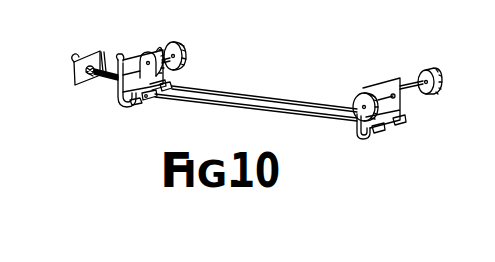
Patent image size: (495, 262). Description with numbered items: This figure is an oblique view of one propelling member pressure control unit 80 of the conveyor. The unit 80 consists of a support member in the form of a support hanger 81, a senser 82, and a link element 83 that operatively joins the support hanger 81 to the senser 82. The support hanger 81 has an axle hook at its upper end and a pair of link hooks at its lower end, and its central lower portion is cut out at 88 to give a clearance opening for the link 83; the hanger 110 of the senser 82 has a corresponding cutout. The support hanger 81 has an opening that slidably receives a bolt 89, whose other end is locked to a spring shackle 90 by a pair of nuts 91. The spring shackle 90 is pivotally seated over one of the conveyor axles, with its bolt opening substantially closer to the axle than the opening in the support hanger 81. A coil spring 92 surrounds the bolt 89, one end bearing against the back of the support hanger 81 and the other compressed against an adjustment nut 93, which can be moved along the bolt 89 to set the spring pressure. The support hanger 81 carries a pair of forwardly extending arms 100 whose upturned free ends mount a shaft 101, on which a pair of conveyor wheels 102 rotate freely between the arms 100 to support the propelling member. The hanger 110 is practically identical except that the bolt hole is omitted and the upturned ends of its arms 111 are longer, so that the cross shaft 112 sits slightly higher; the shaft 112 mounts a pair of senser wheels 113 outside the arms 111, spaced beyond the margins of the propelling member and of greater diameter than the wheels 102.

The pressure control unit 80 is at (136, 79).
The support hanger 81 is at (171, 77).
The senser 82 is at (422, 96).
The link element 83 is at (263, 97).
The cutout 88 is at (151, 99).
The bolt 89 is at (92, 77).
The spring shackle 90 is at (70, 77).
The nuts 91 is at (89, 66).
The coil spring 92 is at (110, 80).
The adjustment nut 93 is at (103, 63).
The arms 100 is at (129, 72).
The shaft 101 is at (168, 53).
The conveyor wheels 102 is at (182, 62).
The hanger 110 is at (353, 133).
The arms 111 is at (390, 96).
The cross shaft 112 is at (404, 87).
The senser wheels 113 is at (440, 78).